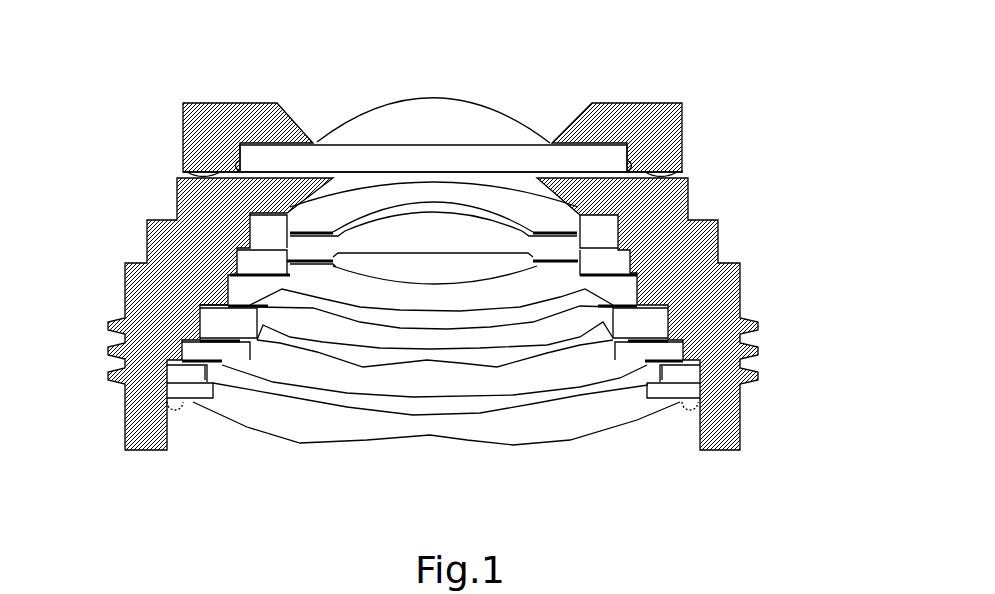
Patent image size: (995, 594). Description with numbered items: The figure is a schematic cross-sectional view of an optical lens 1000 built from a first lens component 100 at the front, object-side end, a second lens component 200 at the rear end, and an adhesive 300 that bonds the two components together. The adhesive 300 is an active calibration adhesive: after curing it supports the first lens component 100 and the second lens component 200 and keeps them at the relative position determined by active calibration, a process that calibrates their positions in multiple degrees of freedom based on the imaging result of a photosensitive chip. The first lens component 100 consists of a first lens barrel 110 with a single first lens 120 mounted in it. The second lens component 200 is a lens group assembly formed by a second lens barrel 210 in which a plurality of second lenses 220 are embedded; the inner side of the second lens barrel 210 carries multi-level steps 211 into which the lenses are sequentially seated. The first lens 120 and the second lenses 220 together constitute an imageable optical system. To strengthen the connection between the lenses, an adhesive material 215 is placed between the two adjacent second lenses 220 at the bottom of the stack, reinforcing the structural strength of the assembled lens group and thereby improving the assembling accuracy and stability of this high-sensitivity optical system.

The optical lens 1000 is at (447, 34).
The first lens component 100 is at (494, 113).
The first lens barrel 110 is at (650, 120).
The first lens 120 is at (478, 123).
The adhesive 300 is at (683, 177).
The second lens component 200 is at (456, 287).
The second lens barrel 210 is at (703, 272).
The multi-level steps 211 is at (227, 288).
The adhesive material 215 is at (177, 410).
The second lenses 220 is at (313, 272).